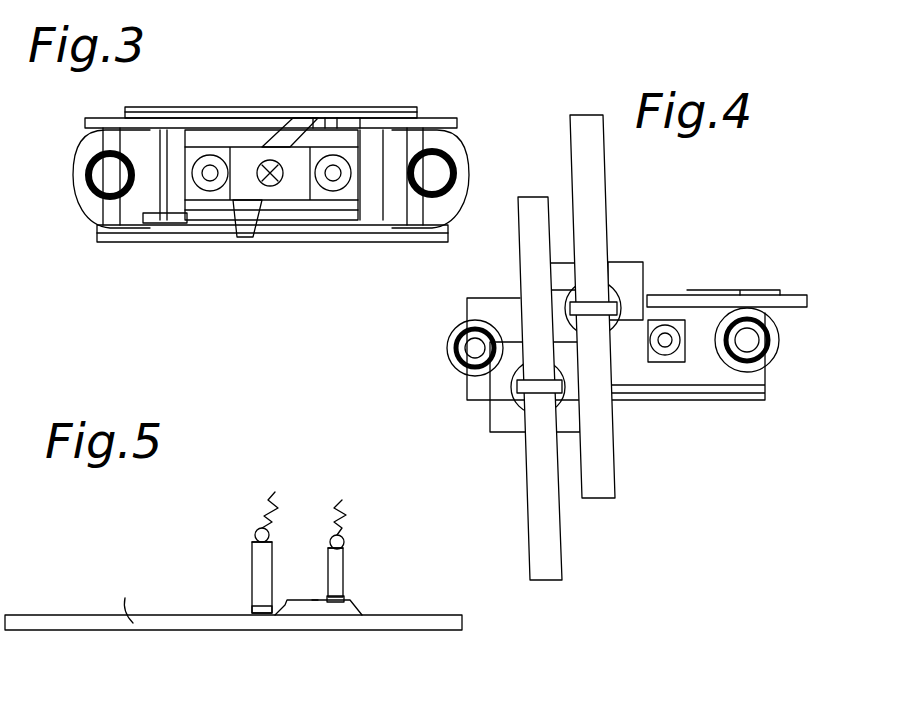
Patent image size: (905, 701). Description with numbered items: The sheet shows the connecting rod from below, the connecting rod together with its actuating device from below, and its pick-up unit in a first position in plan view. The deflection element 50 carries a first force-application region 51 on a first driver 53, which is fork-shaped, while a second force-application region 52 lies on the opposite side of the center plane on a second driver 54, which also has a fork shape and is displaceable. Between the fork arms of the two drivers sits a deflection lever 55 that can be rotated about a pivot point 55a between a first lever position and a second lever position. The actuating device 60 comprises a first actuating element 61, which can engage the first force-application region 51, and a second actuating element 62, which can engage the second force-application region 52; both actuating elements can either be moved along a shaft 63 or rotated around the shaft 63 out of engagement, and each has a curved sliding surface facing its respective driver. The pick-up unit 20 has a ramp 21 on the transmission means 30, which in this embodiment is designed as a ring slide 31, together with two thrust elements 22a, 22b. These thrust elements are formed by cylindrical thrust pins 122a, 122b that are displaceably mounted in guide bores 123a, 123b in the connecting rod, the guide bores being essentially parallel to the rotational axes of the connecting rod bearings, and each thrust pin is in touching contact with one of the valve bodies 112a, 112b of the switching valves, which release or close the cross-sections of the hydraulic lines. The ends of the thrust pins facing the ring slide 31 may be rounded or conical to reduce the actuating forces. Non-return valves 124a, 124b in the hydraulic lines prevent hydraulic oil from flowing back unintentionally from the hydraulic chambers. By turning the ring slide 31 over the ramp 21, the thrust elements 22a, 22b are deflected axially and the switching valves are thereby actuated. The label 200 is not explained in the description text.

In FIG. 5, the pick-up unit 20 is at (303, 657).
In FIG. 5, the ramp 21 is at (285, 623).
In FIG. 5, the thrust element 22a is at (257, 567).
In FIG. 5, the thrust element 22b is at (342, 573).
In FIG. 3, the transmission means 30 is at (432, 118).
In FIG. 4, the transmission means 30 is at (750, 295).
In FIG. 5, the transmission means 30 is at (198, 623).
In FIG. 5, the ring slide 31 is at (131, 593).
In FIG. 3, the deflection element 50 is at (337, 237).
In FIG. 3, the first force-application region 51 is at (250, 118).
In FIG. 3, the second force-application region 52 is at (200, 227).
In FIG. 3, the first driver 53 is at (347, 120).
In FIG. 3, the second driver 54 is at (280, 240).
In FIG. 3, the deflection lever 55 is at (243, 238).
In FIG. 3, the pivot point 55a is at (296, 120).
In FIG. 4, the actuating device 60 is at (560, 287).
In FIG. 4, the first actuating element 61 is at (628, 287).
In FIG. 4, the second actuating element 62 is at (507, 410).
In FIG. 4, the shaft 63 is at (597, 472).
In FIG. 5, the valve body 112a is at (257, 530).
In FIG. 5, the valve body 112b is at (347, 538).
In FIG. 5, the thrust pin 122a is at (257, 597).
In FIG. 5, the thrust pin 122b is at (343, 583).
In FIG. 5, the guide bore 123a is at (252, 538).
In FIG. 5, the guide bore 123b is at (326, 565).
In FIG. 5, the non-return valve 124a is at (291, 493).
In FIG. 5, the non-return valve 124b is at (344, 502).
In FIG. 5, the gap 200 is at (312, 602).